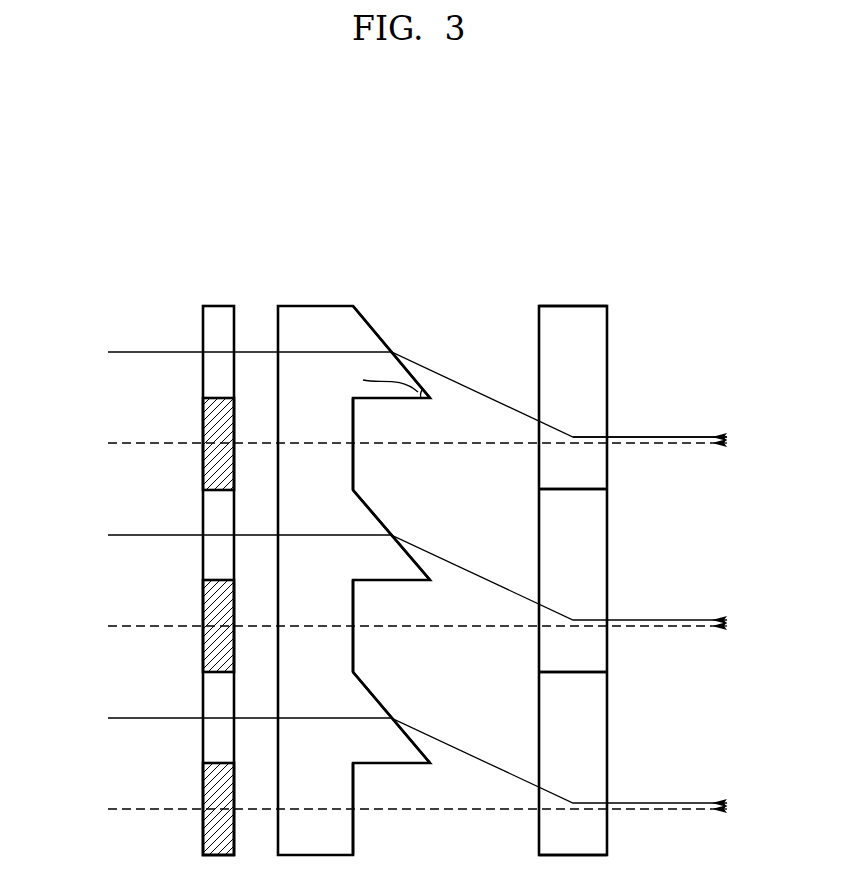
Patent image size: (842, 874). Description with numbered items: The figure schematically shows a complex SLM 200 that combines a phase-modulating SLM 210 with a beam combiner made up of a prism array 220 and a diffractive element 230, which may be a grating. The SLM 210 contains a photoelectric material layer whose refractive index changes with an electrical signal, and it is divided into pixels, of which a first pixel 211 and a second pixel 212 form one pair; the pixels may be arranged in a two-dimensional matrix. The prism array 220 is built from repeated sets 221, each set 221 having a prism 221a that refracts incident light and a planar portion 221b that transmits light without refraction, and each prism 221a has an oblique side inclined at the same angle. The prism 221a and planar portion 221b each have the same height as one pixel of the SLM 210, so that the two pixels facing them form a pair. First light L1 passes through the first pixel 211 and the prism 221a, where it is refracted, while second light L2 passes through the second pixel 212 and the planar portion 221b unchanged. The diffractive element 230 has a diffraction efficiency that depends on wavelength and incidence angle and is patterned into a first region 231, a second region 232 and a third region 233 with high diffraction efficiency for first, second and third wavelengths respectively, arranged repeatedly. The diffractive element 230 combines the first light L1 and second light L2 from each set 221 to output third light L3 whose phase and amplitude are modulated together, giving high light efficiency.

The complex SLM 200 is at (140, 230).
The SLM 210 is at (219, 316).
The first pixel 211 is at (212, 372).
The second pixel 212 is at (207, 472).
The prism array 220 is at (317, 320).
The set 221 is at (490, 486).
The prism 221a is at (390, 400).
The planar portion 221b is at (353, 462).
The diffractive element 230 is at (571, 316).
The first region 231 is at (597, 375).
The second region 232 is at (597, 576).
The third region 233 is at (597, 760).
The first light L1 is at (128, 352).
The second light L2 is at (128, 443).
The third light L3 is at (666, 439).